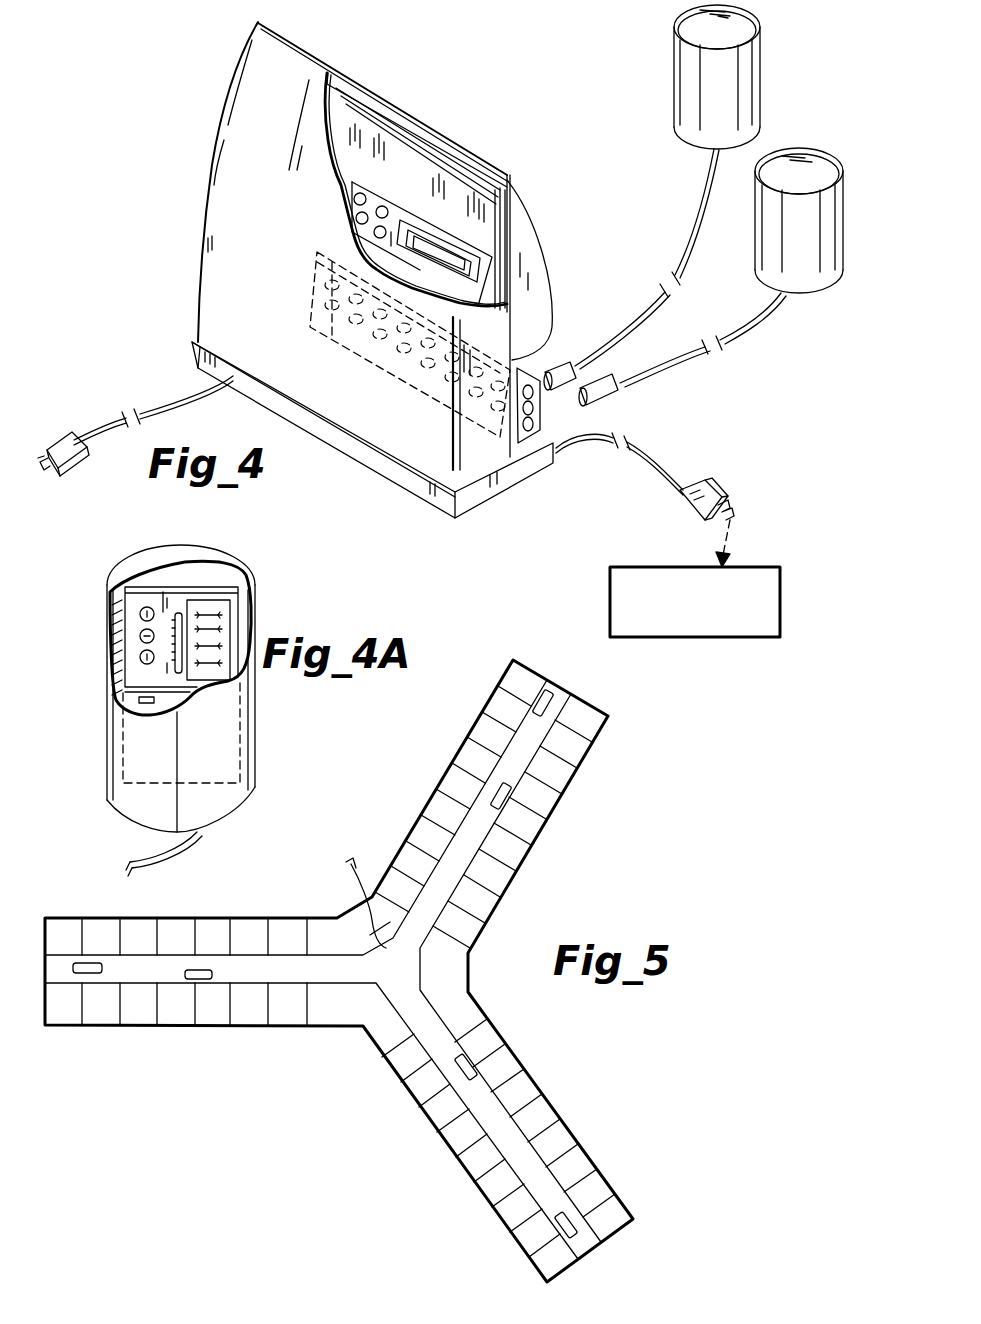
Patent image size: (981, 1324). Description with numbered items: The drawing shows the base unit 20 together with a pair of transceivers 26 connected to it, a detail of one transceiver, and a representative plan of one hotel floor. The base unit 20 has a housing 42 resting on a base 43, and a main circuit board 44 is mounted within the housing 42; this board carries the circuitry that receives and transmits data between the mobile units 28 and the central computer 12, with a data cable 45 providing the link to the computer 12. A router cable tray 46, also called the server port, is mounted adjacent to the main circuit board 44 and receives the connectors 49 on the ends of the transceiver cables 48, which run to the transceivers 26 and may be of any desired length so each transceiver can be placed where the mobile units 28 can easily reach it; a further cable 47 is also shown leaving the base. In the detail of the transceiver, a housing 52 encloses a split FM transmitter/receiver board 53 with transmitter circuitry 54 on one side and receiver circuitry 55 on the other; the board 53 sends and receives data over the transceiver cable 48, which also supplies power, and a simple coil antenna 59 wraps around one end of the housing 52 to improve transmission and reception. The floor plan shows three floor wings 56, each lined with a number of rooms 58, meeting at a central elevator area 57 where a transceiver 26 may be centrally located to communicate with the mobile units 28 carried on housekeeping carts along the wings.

In FIG. 4, the central computer 12 is at (645, 565).
In FIG. 4, the base unit 20 is at (188, 125).
In FIG. 4, the transceiver 26 is at (655, 58).
In FIG. 4A, the transceiver 26 is at (264, 628).
In FIG. 5, the transceiver 26 is at (400, 945).
In FIG. 5, the mobile unit 28 is at (88, 963).
In FIG. 4, the housing 42 is at (220, 180).
In FIG. 4, the base 43 is at (408, 470).
In FIG. 4, the main circuit board 44 is at (418, 165).
In FIG. 4, the data cable 45 is at (702, 440).
In FIG. 4, the router cable tray 46 is at (315, 262).
In FIG. 4, the power cable with plug 47 is at (158, 408).
In FIG. 4, the transceiver cable 48 is at (697, 222).
In FIG. 4A, the transceiver cable 48 is at (151, 860).
In FIG. 5, the transceiver cable 48 is at (358, 878).
In FIG. 4, the connector 49 is at (557, 362).
In FIG. 4A, the housing 52 is at (258, 712).
In FIG. 4A, the split FM transmitter/receiver board 53 is at (147, 584).
In FIG. 4A, the transmitter circuitry 54 is at (140, 597).
In FIG. 4A, the receiver circuitry 55 is at (130, 707).
In FIG. 5, the floor wing 56 is at (145, 978).
In FIG. 5, the central elevator area 57 is at (388, 978).
In FIG. 5, the room 58 is at (218, 1003).
In FIG. 4A, the coil antenna 59 is at (120, 645).